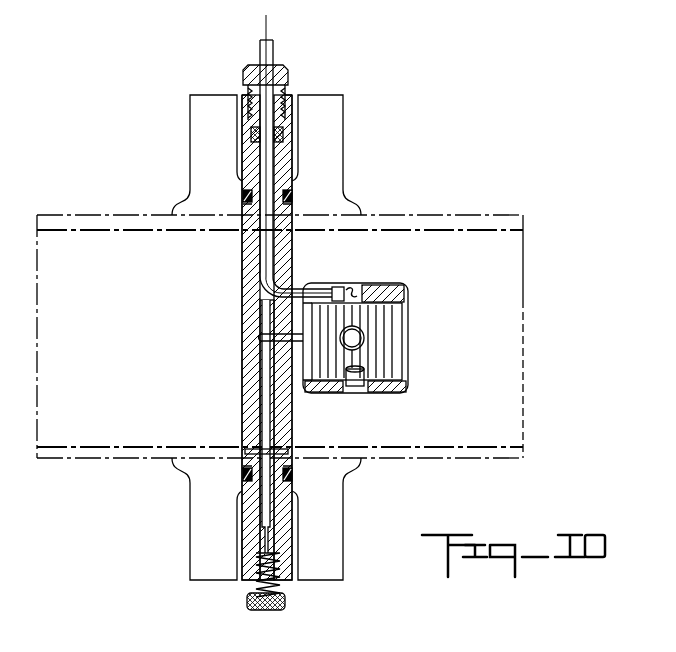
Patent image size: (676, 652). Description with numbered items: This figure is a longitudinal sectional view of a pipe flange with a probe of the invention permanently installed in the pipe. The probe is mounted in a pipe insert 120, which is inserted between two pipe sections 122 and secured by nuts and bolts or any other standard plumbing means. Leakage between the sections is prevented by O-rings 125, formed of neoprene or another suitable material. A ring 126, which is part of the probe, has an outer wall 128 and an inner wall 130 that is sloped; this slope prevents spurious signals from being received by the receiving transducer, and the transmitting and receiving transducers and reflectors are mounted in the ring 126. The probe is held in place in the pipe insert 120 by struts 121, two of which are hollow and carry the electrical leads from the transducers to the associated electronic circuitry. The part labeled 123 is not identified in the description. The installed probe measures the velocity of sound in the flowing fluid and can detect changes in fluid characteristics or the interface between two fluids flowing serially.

The pipe insert 120 is at (288, 169).
The struts 121 is at (290, 195).
The pipe sections 122 is at (117, 220).
The mounting flange 123 is at (202, 522).
The O-rings 125 is at (292, 201).
The ring 126 is at (382, 393).
The outer wall 128 is at (385, 287).
The inner wall 130 is at (380, 373).